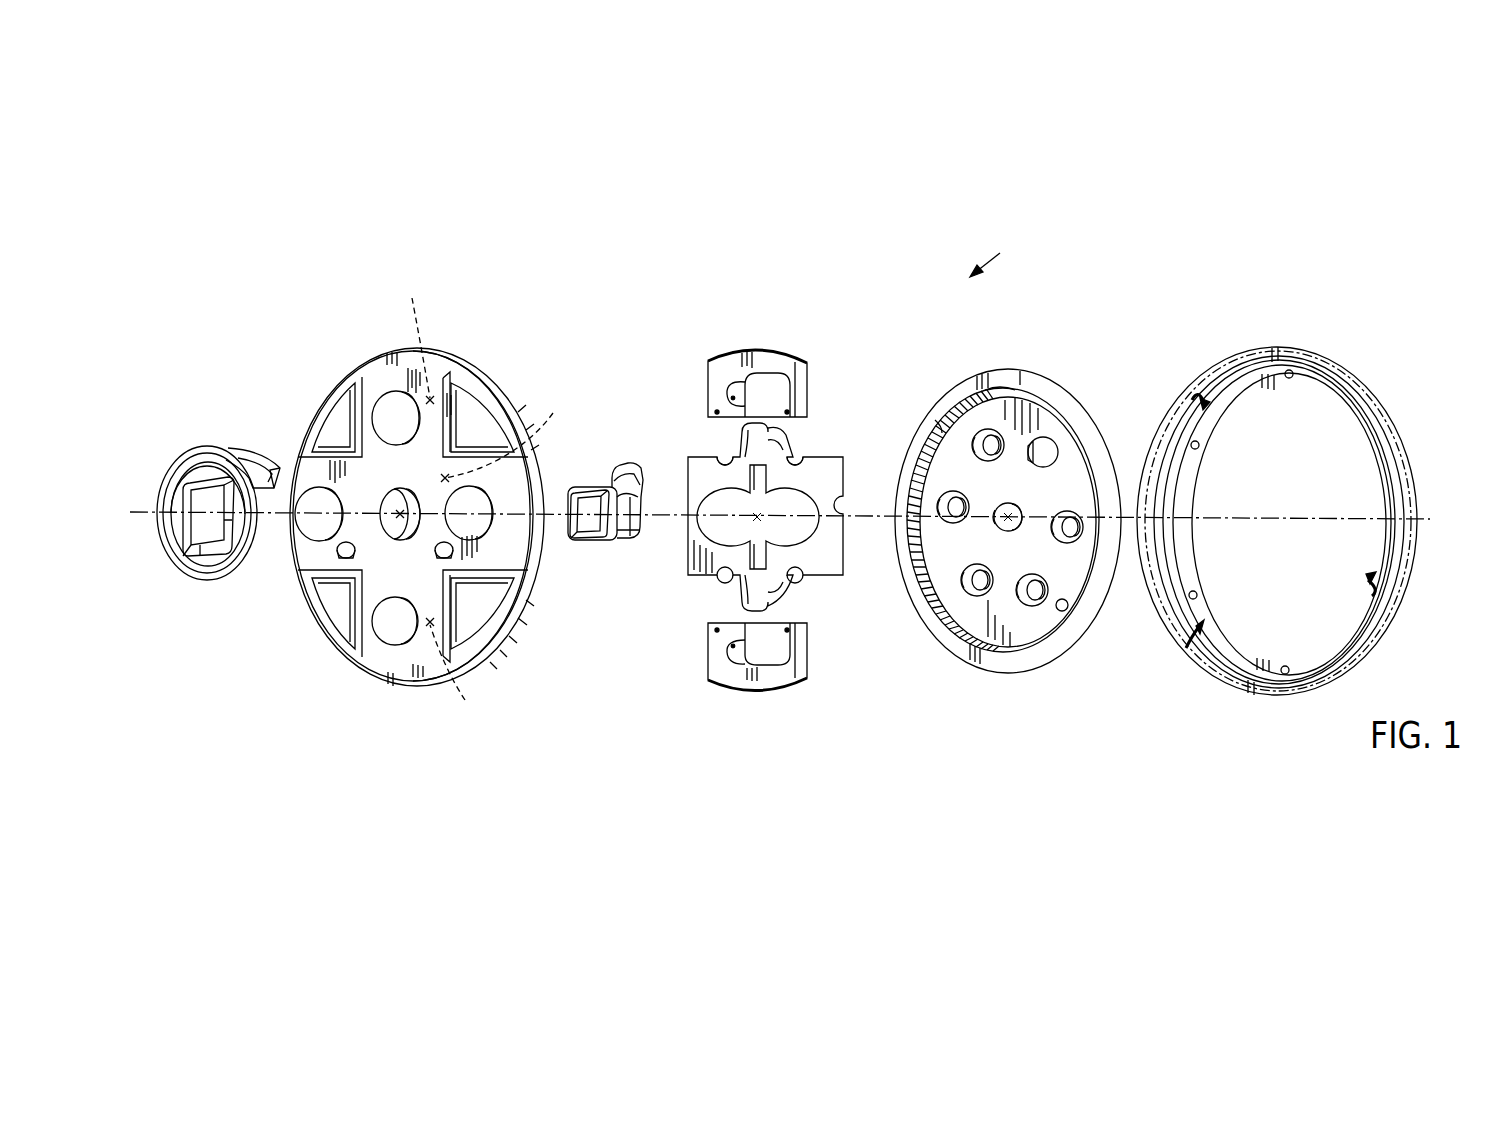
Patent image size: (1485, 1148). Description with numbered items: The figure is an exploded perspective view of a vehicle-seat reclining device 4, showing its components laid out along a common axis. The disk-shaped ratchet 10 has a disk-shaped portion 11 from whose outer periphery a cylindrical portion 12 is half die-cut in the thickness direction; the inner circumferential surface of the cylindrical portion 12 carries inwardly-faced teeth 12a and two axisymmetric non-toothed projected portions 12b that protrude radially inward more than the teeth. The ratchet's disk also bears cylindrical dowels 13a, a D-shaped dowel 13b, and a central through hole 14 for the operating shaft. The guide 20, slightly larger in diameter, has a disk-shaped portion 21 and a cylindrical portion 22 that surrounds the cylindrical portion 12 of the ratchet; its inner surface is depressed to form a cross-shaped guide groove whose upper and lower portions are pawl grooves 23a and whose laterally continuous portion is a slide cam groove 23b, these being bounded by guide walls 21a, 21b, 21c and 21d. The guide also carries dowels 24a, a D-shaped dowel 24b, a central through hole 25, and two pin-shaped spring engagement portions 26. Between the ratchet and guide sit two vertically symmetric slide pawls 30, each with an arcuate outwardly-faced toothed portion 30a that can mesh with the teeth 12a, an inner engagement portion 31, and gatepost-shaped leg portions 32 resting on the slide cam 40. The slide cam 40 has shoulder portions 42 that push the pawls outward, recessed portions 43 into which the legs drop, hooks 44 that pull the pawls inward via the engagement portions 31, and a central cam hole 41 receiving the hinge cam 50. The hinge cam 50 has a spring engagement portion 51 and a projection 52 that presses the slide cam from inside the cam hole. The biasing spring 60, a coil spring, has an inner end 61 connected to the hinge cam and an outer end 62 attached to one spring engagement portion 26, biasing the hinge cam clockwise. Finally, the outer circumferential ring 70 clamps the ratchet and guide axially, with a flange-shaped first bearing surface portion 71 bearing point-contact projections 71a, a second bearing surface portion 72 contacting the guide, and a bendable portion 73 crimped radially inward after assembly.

The reclining device 4 is at (995, 254).
The ratchet 10 is at (1060, 388).
The disk-shaped portion 11 is at (1040, 398).
The cylindrical portion 12 is at (1097, 471).
The inwardly-faced teeth 12a is at (999, 388).
The projected portion 12b is at (942, 423).
The dowel 13a is at (950, 497).
The D-shaped dowel 13b is at (1050, 447).
The through hole 14 is at (1021, 511).
The guide 20 is at (457, 366).
The disk-shaped portion 21 is at (432, 428).
The guide wall 21a is at (350, 440).
The guide wall 21b is at (465, 438).
The guide wall 21c is at (348, 590).
The guide wall 21d is at (465, 598).
The cylindrical portion 22 is at (467, 653).
The pawl groove 23a is at (440, 511).
The slide cam groove 23b is at (533, 433).
The dowel 24a is at (316, 497).
The D-shaped dowel 24b is at (389, 632).
The through hole 25 is at (406, 505).
The spring engagement portion 26 is at (355, 558).
The slide pawl 30 is at (801, 383).
The outwardly-faced toothed portion 30a is at (766, 350).
The engagement portion 31 is at (733, 396).
The leg portion 32 is at (717, 411).
The slide cam 40 is at (820, 472).
The cam hole 41 is at (772, 520).
The shoulder portion 42 is at (787, 463).
The recessed portion 43 is at (790, 446).
The hook 44 is at (745, 428).
The hinge cam 50 is at (614, 540).
The spring engagement portion 51 is at (580, 540).
The projection 52 is at (624, 465).
The biasing spring 60 is at (190, 454).
The inner end 61 is at (189, 556).
The outer end 62 is at (268, 462).
The outer circumferential ring 70 is at (1337, 374).
The first bearing surface portion 71 is at (1240, 394).
The projection 71a is at (1292, 378).
The second bearing surface portion 72 is at (1176, 489).
The bendable portion 73 is at (1386, 446).